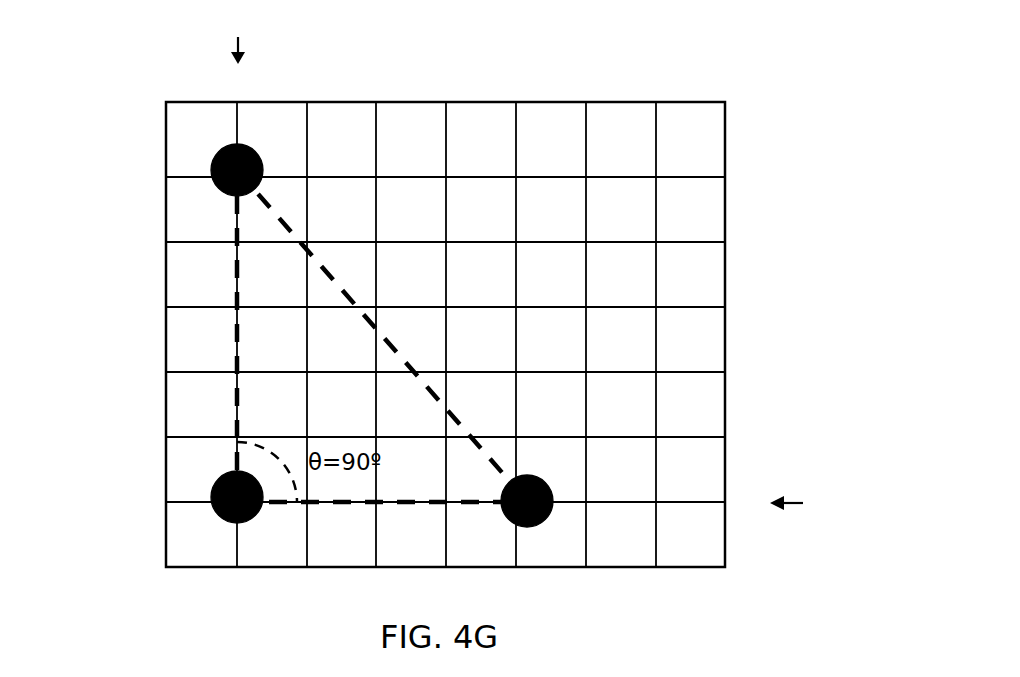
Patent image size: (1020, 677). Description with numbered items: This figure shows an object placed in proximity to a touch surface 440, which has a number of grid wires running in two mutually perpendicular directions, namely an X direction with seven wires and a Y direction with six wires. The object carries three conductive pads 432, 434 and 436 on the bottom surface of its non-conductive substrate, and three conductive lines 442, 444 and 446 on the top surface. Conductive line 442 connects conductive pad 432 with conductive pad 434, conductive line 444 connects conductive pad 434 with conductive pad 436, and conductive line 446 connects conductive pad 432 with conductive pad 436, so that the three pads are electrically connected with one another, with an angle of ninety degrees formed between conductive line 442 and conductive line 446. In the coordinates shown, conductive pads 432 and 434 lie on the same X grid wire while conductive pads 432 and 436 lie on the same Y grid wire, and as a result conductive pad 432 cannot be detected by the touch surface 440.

The touch surface 440 is at (725, 127).
The conductive pad 434 is at (212, 170).
The conductive pad 432 is at (212, 500).
The conductive pad 436 is at (538, 524).
The conductive line 442 is at (233, 335).
The conductive line 444 is at (378, 330).
The conductive line 446 is at (356, 508).